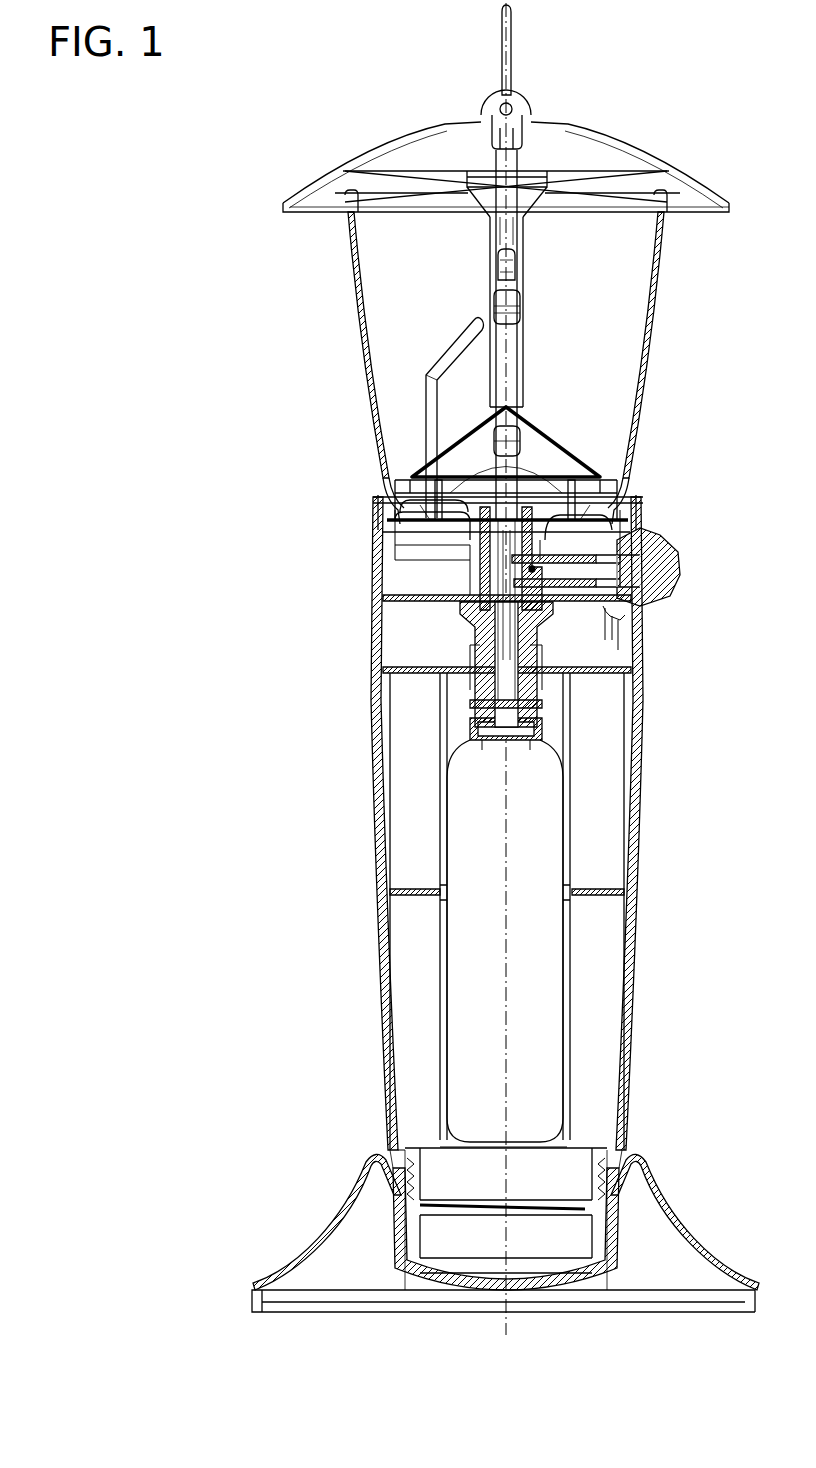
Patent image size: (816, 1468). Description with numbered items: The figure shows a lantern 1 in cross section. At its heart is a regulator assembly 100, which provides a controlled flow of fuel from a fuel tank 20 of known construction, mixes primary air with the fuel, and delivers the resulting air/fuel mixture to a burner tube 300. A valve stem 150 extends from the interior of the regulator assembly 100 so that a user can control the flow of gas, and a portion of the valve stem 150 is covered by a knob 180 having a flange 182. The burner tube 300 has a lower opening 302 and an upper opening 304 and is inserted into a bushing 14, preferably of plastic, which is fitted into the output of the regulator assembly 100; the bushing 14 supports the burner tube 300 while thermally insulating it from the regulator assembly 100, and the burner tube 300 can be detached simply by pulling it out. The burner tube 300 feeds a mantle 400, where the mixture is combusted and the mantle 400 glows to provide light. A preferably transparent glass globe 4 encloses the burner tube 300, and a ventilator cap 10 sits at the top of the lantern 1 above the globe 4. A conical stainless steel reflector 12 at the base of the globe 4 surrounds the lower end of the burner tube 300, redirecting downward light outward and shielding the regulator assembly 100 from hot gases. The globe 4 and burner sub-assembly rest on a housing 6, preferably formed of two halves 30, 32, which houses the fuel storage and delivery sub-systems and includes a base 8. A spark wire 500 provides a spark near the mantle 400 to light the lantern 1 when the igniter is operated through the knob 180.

The lantern 1 is at (682, 396).
The glass globe 4 is at (657, 228).
The housing 6 is at (645, 712).
The base 8 is at (675, 1233).
The ventilator cap 10 is at (574, 128).
The reflector 12 is at (546, 440).
The bushing 14 is at (576, 500).
The fuel tank 20 is at (488, 948).
The housing half 30 is at (375, 905).
The housing half 32 is at (640, 877).
The regulator assembly 100 is at (456, 632).
The valve stem 150 is at (558, 572).
The knob 180 is at (680, 552).
The flange 182 is at (626, 620).
The burner tube 300 is at (524, 376).
The lower opening 302 is at (519, 478).
The upper opening 304 is at (522, 272).
The mantle 400 is at (524, 318).
The spark wire 500 is at (460, 334).